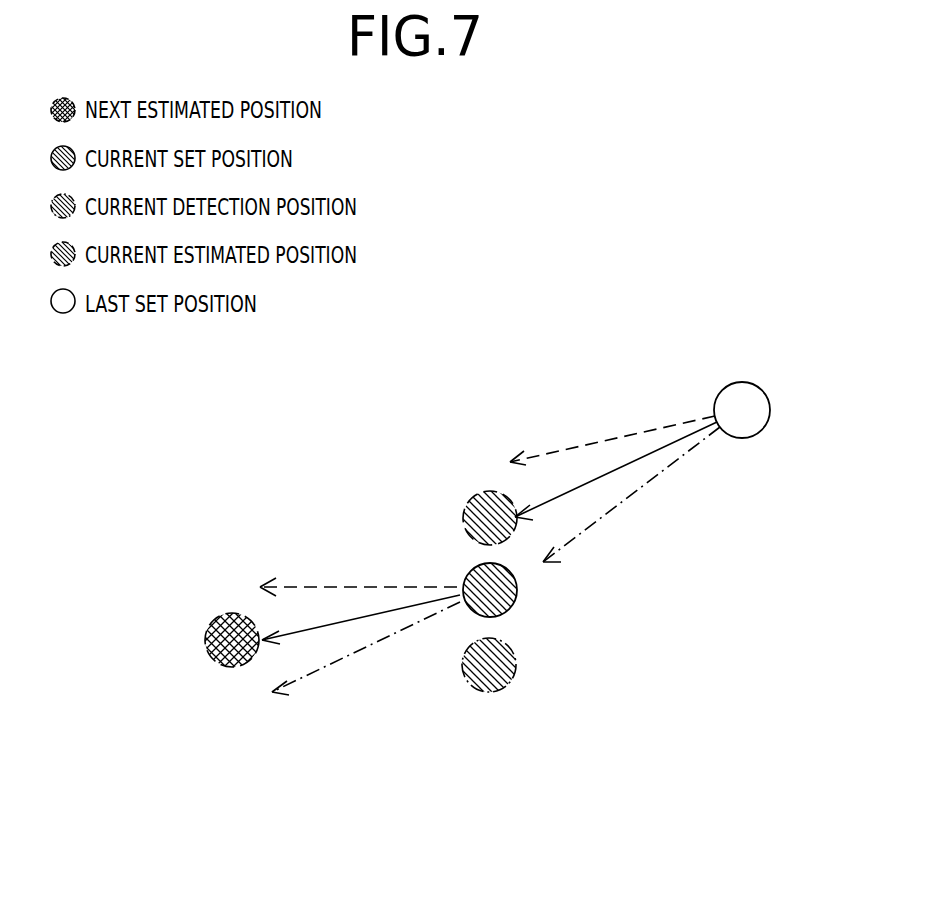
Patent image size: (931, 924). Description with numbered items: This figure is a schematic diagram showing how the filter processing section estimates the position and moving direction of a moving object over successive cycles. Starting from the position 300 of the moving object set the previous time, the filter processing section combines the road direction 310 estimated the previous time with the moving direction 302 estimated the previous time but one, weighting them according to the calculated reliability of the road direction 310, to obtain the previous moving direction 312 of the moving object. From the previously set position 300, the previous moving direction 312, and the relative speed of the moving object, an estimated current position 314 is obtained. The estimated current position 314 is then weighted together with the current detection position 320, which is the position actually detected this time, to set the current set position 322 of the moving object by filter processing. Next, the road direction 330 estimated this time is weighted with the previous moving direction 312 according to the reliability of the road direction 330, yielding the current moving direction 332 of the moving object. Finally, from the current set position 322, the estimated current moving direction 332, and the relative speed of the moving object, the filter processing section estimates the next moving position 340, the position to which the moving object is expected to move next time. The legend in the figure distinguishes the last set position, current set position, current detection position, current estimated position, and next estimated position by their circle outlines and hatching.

The position set the previous time 300 is at (738, 382).
The moving direction estimated the previous time but one 302 is at (690, 452).
The road direction estimated the previous time 310 is at (655, 426).
The previous moving direction 312 is at (590, 479).
The estimated current position 314 is at (483, 491).
The current detection position 320 is at (494, 692).
The current set position 322 is at (518, 586).
The road direction estimated this time 330 is at (379, 586).
The current moving direction 332 is at (320, 626).
The next moving position 340 is at (205, 640).